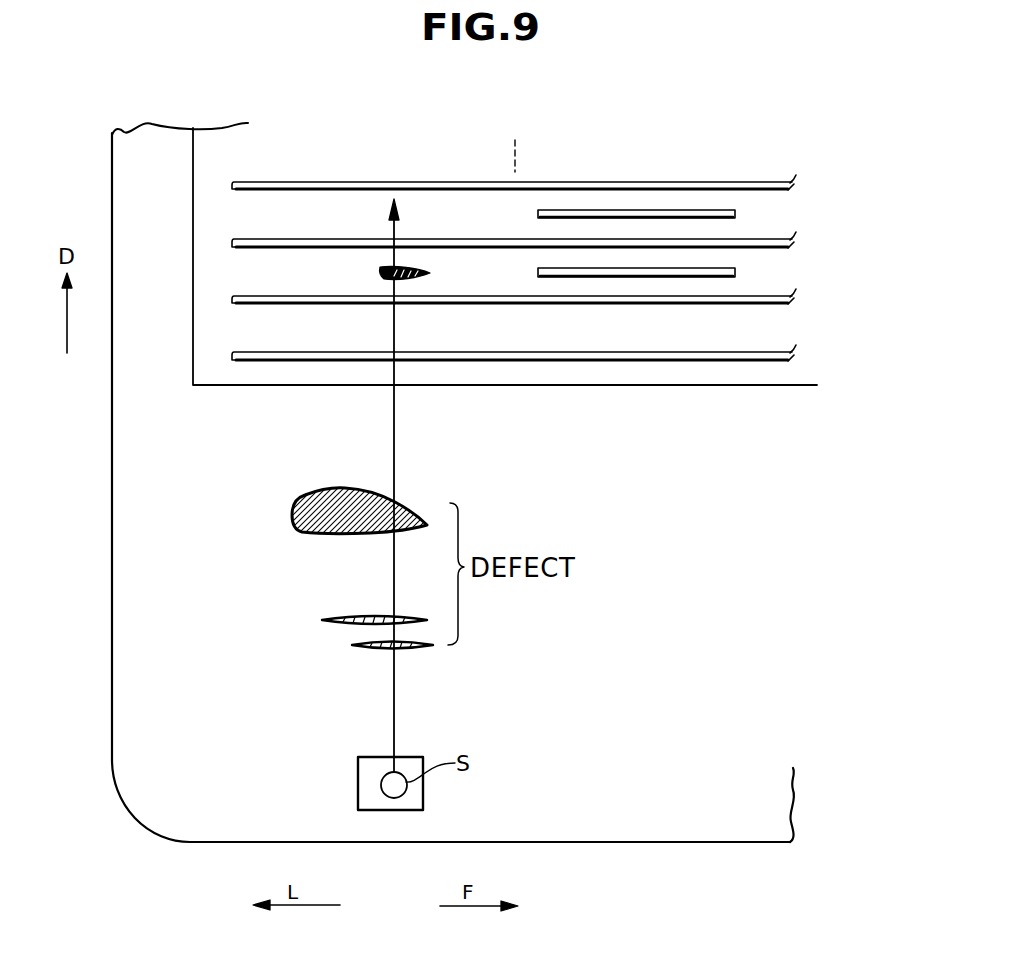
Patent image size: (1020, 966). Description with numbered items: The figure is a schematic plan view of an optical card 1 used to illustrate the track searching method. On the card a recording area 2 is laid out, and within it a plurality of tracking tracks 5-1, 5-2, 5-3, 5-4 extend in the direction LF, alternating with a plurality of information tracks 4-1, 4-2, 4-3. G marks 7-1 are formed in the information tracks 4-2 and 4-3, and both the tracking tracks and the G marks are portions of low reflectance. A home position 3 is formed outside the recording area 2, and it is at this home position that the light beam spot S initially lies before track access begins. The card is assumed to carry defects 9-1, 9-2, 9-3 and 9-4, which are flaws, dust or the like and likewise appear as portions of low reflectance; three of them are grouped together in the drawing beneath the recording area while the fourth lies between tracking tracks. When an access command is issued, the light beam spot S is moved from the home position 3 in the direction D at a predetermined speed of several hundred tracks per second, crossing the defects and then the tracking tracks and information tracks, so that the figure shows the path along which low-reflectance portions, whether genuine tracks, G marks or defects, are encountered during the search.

The optical card 1 is at (724, 843).
The recording area 2 is at (210, 332).
The home position 3 is at (424, 797).
The information track 4-1 is at (768, 333).
The information track 4-2 is at (760, 279).
The information track 4-3 is at (745, 216).
The tracking track 5-1 is at (770, 362).
The tracking track 5-2 is at (768, 305).
The tracking track 5-3 is at (765, 249).
The tracking track 5-4 is at (765, 191).
The G mark 7-1 is at (572, 268).
The defect 9-1 is at (366, 647).
The defect 9-2 is at (337, 623).
The defect 9-3 is at (308, 535).
The defect 9-4 is at (380, 272).